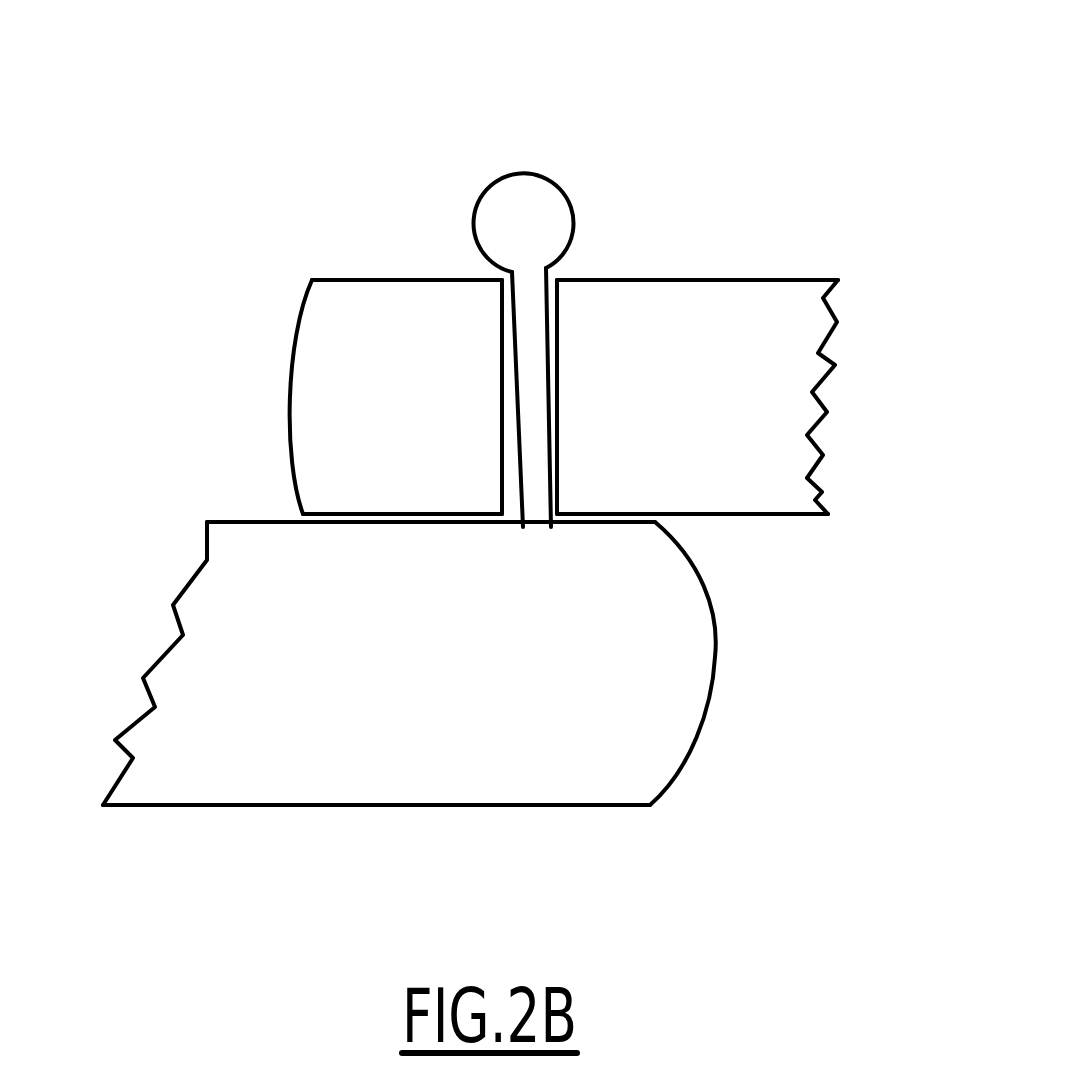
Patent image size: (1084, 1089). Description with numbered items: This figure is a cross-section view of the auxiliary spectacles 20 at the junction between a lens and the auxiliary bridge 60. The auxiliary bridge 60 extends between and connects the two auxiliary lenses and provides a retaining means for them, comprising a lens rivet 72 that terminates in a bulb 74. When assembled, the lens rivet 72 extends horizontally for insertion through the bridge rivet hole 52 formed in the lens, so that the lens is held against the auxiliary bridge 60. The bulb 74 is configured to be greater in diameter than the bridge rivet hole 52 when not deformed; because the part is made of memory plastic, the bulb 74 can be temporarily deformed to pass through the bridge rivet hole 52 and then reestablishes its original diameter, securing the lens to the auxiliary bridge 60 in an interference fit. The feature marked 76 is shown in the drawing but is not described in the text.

The first panel 20 is at (758, 482).
The slot 52 is at (557, 279).
The second panel 60 is at (233, 763).
The stem 72 is at (533, 365).
The head 74 is at (520, 217).
The rounded end 76 is at (662, 717).